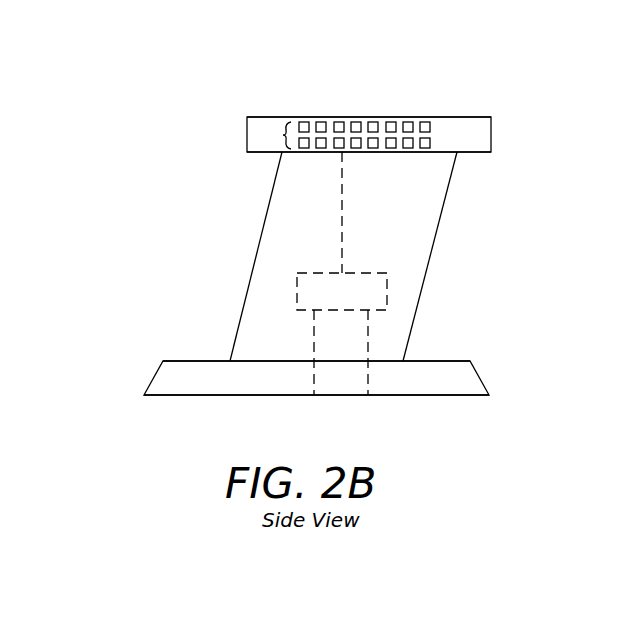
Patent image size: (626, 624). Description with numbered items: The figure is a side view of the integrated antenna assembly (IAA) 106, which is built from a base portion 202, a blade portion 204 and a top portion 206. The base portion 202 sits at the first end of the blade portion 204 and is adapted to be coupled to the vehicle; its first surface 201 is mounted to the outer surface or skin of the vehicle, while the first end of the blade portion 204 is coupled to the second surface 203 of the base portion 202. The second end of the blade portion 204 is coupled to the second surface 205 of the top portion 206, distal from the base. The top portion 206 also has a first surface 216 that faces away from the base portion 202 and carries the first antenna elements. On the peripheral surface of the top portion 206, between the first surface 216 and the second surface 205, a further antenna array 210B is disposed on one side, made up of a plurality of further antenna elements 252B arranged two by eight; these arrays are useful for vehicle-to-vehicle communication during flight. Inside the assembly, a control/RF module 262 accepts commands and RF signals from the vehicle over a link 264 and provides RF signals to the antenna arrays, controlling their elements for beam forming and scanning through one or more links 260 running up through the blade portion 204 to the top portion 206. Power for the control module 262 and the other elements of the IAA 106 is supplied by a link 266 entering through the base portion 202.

The integrated antenna assembly 106 is at (444, 70).
The first surface of the base portion 201 is at (437, 395).
The base portion 202 is at (478, 378).
The second surface of the base portion 203 is at (437, 361).
The blade portion 204 is at (257, 251).
The second surface of the top portion 205 is at (470, 152).
The top portion 206 is at (491, 131).
The first surface of the top portion 216 is at (416, 117).
The further antenna array 210B is at (262, 135).
The further antenna elements 252B is at (339, 122).
The link 260 is at (342, 187).
The control/RF module 262 is at (387, 292).
The link 264 is at (314, 378).
The link 266 is at (368, 378).